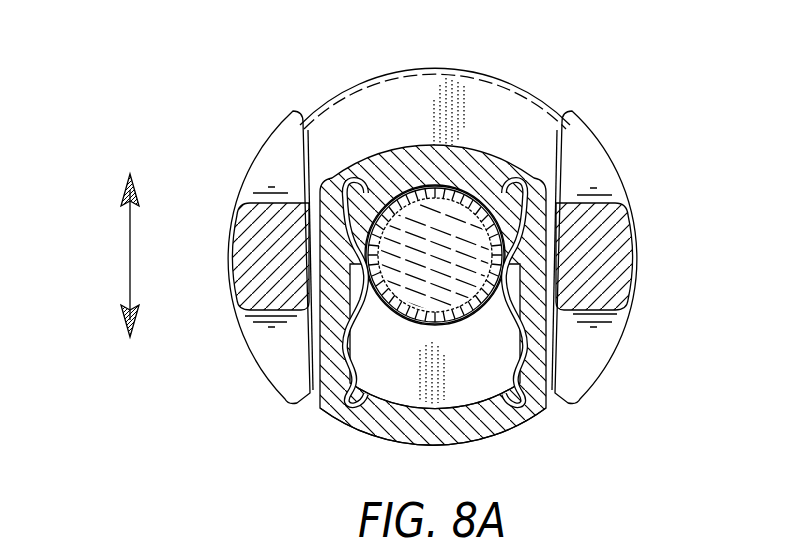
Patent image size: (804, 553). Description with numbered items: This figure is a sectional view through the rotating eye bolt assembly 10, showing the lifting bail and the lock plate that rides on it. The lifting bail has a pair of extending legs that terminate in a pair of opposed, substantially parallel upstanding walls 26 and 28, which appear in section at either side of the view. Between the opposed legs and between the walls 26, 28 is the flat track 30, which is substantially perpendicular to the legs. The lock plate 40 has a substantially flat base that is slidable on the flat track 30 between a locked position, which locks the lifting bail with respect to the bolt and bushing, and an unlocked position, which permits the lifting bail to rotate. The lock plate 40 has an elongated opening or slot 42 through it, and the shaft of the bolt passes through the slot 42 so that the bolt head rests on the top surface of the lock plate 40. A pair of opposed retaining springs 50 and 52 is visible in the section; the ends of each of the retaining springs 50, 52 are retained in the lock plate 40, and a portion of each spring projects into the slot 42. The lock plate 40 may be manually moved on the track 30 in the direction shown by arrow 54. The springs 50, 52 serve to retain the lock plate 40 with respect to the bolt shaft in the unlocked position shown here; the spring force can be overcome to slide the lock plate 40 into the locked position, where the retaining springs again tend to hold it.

The rotating eye bolt assembly 10 is at (471, 259).
The upstanding wall 26 is at (300, 360).
The upstanding wall 28 is at (566, 360).
The flat track 30 is at (517, 120).
The lock plate 40 is at (370, 165).
The elongated slot 42 is at (385, 412).
The retaining spring 50 is at (353, 308).
The retaining spring 52 is at (507, 311).
The arrow 54 is at (130, 251).